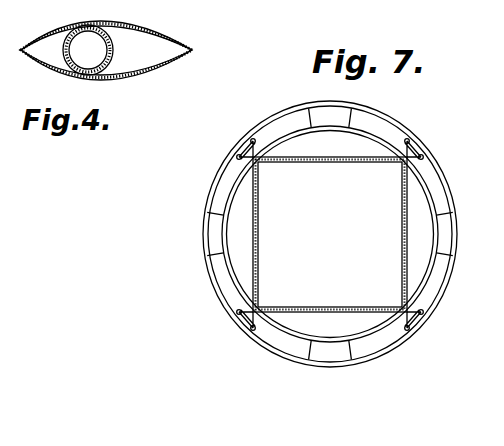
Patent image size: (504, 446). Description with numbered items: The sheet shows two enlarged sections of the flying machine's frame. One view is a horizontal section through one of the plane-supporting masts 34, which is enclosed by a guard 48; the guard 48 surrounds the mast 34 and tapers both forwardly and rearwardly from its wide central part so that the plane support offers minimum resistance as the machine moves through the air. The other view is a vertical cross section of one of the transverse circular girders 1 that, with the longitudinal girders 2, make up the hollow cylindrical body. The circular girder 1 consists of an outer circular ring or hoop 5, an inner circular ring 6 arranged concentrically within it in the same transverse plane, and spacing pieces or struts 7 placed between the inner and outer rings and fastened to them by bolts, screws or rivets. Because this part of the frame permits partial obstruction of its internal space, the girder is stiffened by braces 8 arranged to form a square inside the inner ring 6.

In FIG. 7, the transverse circular girder 1 is at (447, 283).
In FIG. 7, the longitudinal girder 2 is at (254, 326).
In FIG. 7, the outer circular ring 5 is at (207, 200).
In FIG. 7, the inner circular ring 6 is at (229, 201).
In FIG. 7, the spacing strut 7 is at (213, 225).
In FIG. 7, the square-forming brace 8 is at (338, 163).
In FIG. 4, the mast 34 is at (88, 50).
In FIG. 4, the guard 48 is at (157, 72).